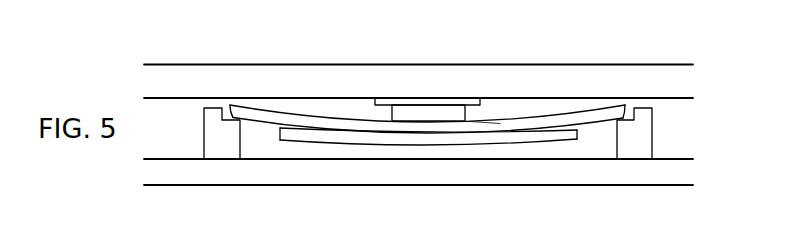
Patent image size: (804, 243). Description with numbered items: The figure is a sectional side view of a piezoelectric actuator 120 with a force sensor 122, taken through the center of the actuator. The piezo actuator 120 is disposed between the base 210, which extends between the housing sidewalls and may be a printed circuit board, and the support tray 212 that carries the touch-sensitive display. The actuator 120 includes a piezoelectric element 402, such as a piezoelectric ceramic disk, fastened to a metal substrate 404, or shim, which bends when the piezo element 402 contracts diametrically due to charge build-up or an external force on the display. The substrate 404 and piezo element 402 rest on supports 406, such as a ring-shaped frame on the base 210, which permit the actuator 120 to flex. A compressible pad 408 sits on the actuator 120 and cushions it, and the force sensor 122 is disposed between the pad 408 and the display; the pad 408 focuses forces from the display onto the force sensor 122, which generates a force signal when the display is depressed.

The piezo actuator 120 is at (483, 119).
The force sensor 122 is at (455, 100).
The base 210 is at (651, 171).
The support tray 212 is at (608, 72).
The piezoelectric element 402 is at (349, 139).
The substrate 404 is at (270, 114).
The support 406 is at (220, 148).
The pad 408 is at (400, 110).